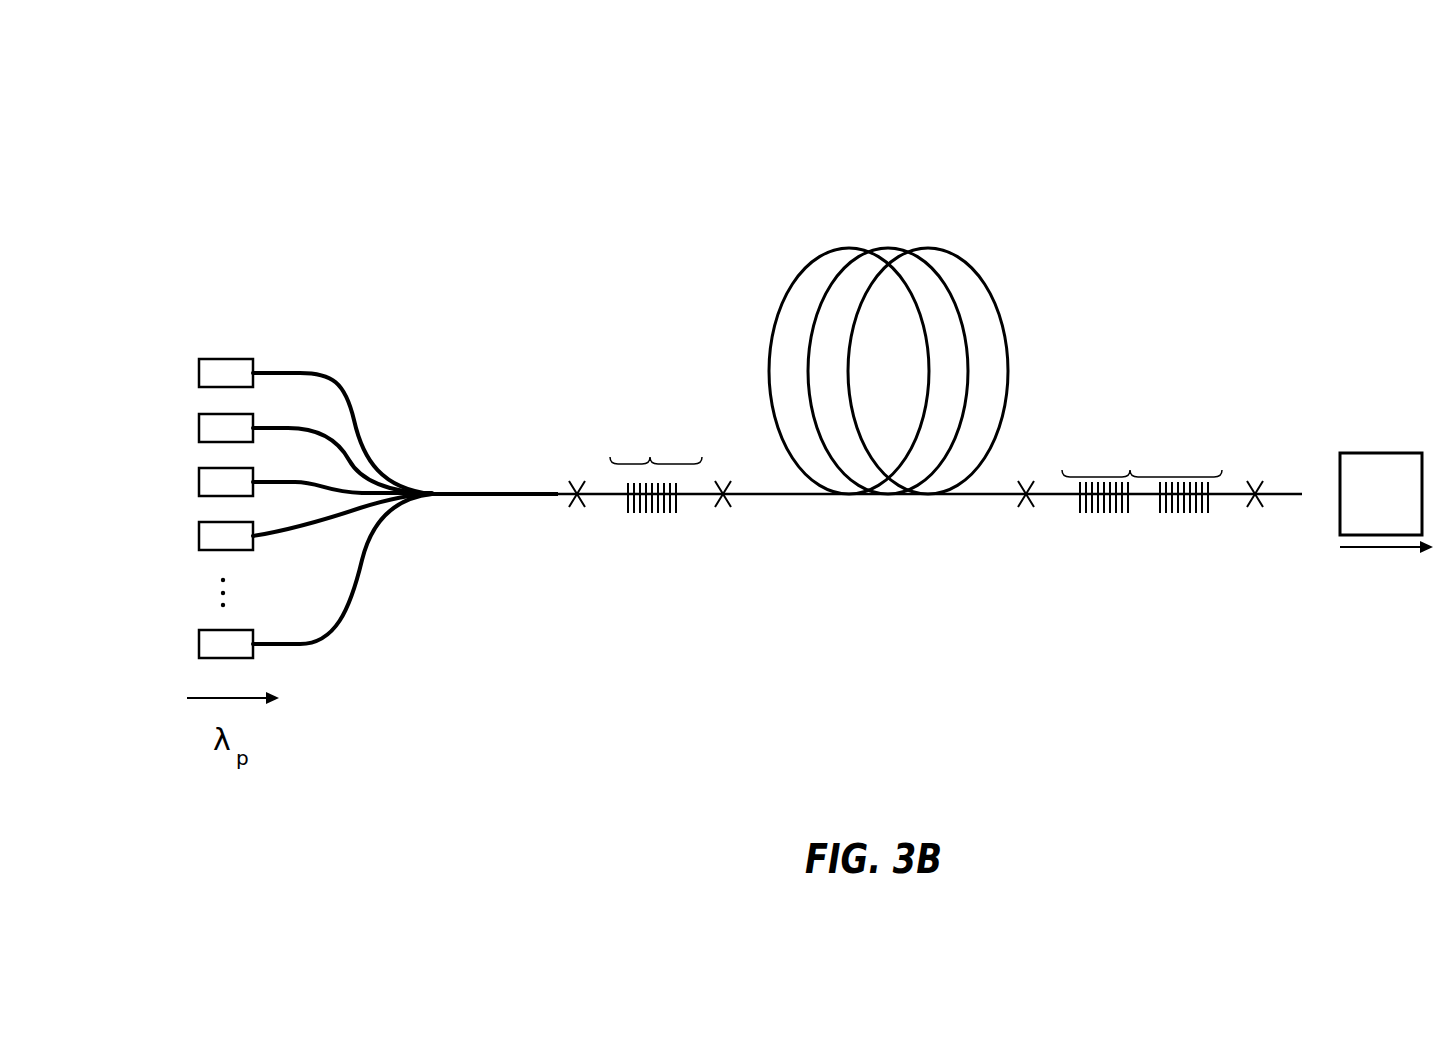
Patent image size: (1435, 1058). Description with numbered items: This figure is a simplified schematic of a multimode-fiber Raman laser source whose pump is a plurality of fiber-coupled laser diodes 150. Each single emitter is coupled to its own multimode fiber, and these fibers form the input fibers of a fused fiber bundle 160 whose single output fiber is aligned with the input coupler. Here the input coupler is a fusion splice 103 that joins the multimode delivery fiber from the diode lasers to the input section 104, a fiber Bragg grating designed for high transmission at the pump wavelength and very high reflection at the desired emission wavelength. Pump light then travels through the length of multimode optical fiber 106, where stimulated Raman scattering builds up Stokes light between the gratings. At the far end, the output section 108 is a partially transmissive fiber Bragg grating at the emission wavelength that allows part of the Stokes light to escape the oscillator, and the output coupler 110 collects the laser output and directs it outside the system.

The pump laser sources 150 is at (187, 643).
The pump combiner 160 is at (465, 510).
The fusion splice 103 is at (572, 467).
The input section 104 is at (650, 457).
The length of multimode optical fiber 106 is at (888, 247).
The output section 108 is at (1130, 472).
The output coupler 110 is at (1380, 453).